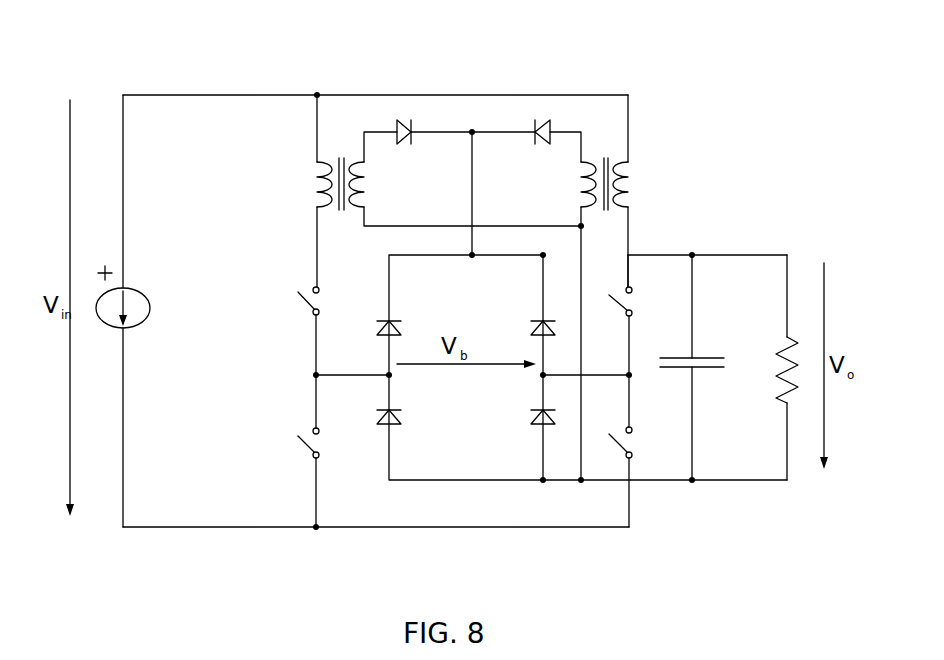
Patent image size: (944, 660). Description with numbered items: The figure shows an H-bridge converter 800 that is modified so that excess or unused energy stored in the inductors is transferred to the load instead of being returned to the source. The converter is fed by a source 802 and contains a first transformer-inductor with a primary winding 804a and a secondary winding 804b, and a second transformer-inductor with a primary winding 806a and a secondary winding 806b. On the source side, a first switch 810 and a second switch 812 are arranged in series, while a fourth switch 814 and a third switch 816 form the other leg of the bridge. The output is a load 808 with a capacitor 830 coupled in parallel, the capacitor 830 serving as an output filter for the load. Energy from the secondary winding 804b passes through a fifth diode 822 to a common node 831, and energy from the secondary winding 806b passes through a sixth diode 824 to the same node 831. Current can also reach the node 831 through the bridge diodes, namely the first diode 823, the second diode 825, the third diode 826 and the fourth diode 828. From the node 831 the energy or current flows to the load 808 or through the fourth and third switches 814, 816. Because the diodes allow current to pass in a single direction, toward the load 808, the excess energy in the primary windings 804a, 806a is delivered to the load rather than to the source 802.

The H-bridge converter 800 is at (704, 63).
The source U1 802 is at (143, 288).
The transformer-inductor L1 primary winding 804a is at (313, 172).
The transformer-inductor L1 secondary winding 804b is at (421, 186).
The transformer-inductor L2 primary winding 806a is at (631, 175).
The transformer-inductor L2 secondary winding 806b is at (582, 205).
The load R1 808 is at (779, 393).
The switch S1 810 is at (302, 301).
The switch S2 812 is at (303, 446).
The switch S4 814 is at (633, 291).
The switch S3 816 is at (623, 450).
The diode D5 822 is at (401, 119).
The diode D1 823 is at (399, 330).
The diode D6 824 is at (550, 119).
The diode D2 825 is at (399, 426).
The diode D3 826 is at (531, 426).
The diode D4 828 is at (533, 330).
The capacitor C1 830 is at (712, 356).
The node 831 is at (475, 251).